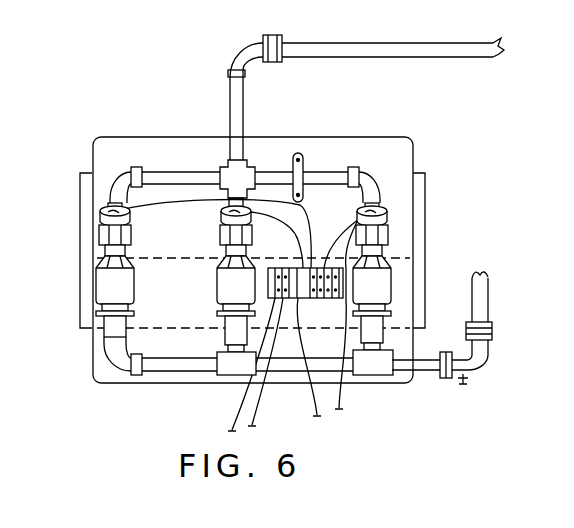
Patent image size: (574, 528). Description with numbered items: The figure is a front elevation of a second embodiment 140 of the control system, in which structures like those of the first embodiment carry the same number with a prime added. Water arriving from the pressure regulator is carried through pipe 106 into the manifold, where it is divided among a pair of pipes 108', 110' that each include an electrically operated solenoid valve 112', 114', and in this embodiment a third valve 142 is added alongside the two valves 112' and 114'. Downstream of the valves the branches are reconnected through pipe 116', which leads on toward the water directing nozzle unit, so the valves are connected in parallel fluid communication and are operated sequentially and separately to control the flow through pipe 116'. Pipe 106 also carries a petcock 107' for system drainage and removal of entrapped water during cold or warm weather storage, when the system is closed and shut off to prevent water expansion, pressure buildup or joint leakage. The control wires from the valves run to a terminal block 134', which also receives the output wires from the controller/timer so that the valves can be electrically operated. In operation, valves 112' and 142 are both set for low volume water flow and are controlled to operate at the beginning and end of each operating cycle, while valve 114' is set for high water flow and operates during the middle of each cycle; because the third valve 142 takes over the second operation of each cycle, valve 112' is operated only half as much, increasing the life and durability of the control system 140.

The second embodiment of the control system 140 is at (151, 137).
The pipe 116' is at (390, 89).
The electrically operated solenoid valve 112' is at (91, 270).
The electrically operated solenoid valve 114' is at (209, 251).
The pipe 110' is at (209, 326).
The terminal block 134' is at (239, 315).
The third valve 142 is at (391, 297).
The pipe 106 is at (428, 372).
The petcock 107' is at (488, 389).
The pipe 108' is at (248, 376).